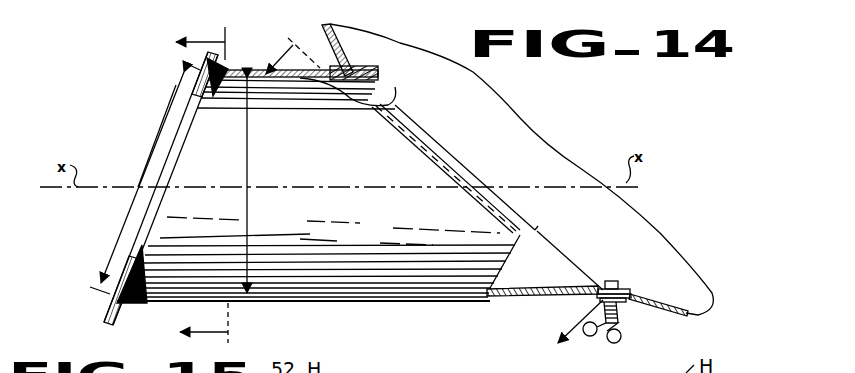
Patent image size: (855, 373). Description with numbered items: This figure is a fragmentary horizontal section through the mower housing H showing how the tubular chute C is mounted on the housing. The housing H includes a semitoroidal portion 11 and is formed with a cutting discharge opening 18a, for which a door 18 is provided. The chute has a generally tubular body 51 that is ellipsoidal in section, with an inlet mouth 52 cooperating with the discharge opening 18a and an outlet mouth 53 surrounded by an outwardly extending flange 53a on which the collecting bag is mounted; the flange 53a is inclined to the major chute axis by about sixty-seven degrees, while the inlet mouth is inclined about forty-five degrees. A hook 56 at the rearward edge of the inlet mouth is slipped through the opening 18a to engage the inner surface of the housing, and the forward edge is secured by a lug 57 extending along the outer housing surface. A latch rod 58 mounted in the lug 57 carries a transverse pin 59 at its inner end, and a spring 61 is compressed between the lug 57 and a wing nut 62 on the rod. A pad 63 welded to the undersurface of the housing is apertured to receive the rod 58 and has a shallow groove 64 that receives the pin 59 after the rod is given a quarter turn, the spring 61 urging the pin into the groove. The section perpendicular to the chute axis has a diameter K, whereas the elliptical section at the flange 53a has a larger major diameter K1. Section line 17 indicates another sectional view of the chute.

The semitoroidal portion 11 is at (680, 305).
The section line 17- 17 is at (202, 187).
The door 18 is at (429, 190).
The discharge opening 18a is at (598, 290).
The tubular body 51 is at (330, 160).
The inlet mouth 52 is at (362, 92).
The outlet mouth 53 is at (178, 134).
The flange 53a is at (170, 158).
The hook 56 is at (347, 63).
The lug 57 is at (623, 303).
The latch rod 58 is at (617, 288).
The transverse pin 59 is at (627, 293).
The spring 61 is at (620, 313).
The wing nut 62 is at (610, 337).
The pad 63 is at (604, 287).
The shallow groove 64 is at (630, 296).
The tubular chute C is at (365, 300).
The housing H is at (552, 142).
The diameter K is at (248, 185).
The major diameter K1 is at (145, 178).